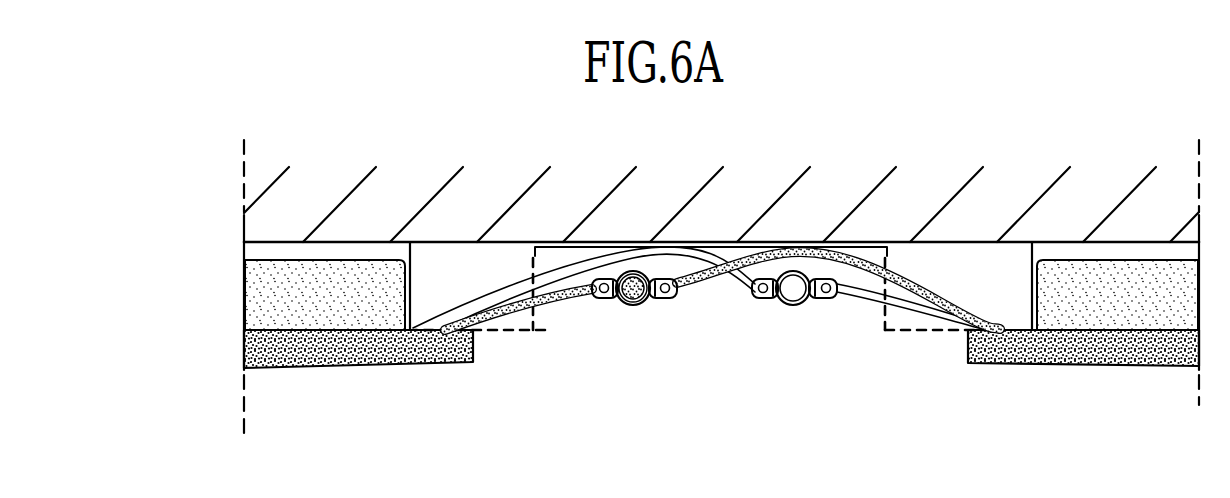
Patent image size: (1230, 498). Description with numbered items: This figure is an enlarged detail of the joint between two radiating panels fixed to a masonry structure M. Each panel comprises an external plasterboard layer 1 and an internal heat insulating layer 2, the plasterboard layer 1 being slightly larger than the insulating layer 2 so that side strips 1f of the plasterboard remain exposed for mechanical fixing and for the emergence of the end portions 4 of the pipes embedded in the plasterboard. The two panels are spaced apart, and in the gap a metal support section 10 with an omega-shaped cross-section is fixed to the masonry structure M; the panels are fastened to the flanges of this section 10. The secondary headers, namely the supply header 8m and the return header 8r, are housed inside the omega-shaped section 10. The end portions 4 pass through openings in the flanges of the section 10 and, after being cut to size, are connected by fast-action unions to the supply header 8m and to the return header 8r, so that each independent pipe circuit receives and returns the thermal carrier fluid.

The masonry structure M is at (872, 218).
The plasterboard layer 1 is at (313, 355).
The side strips 1f is at (445, 328).
The heat insulating layer 2 is at (259, 306).
The end portions 4 is at (493, 300).
The supply header 8m is at (636, 290).
The return header 8r is at (793, 290).
The omega-shaped metal support section 10 is at (530, 332).